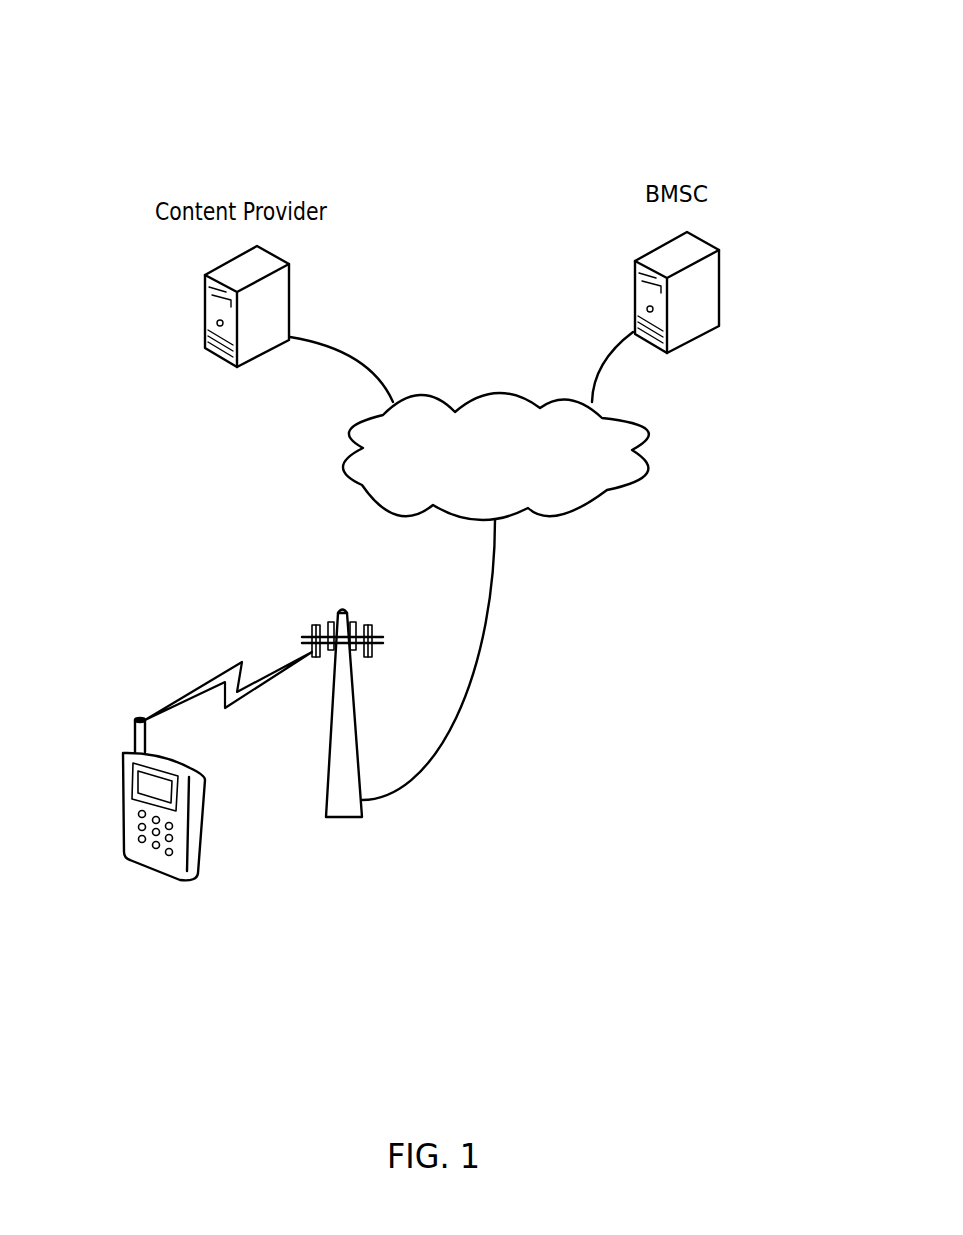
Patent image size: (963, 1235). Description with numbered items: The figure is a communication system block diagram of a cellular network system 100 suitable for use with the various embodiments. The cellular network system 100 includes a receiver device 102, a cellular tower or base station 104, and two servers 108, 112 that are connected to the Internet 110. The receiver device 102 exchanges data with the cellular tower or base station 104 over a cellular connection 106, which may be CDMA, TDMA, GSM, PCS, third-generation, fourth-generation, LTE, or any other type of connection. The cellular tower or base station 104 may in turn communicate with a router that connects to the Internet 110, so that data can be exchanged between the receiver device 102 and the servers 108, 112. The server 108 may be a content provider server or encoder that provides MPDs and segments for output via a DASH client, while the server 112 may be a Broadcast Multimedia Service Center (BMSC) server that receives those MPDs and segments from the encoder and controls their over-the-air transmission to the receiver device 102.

The cellular network system 100 is at (97, 106).
The receiver device 102 is at (205, 818).
The cellular tower or base station 104 is at (353, 698).
The cellular connection 106 is at (223, 673).
The content provider server 108 is at (289, 289).
The Internet 110 is at (340, 475).
The BMSC server 112 is at (718, 284).